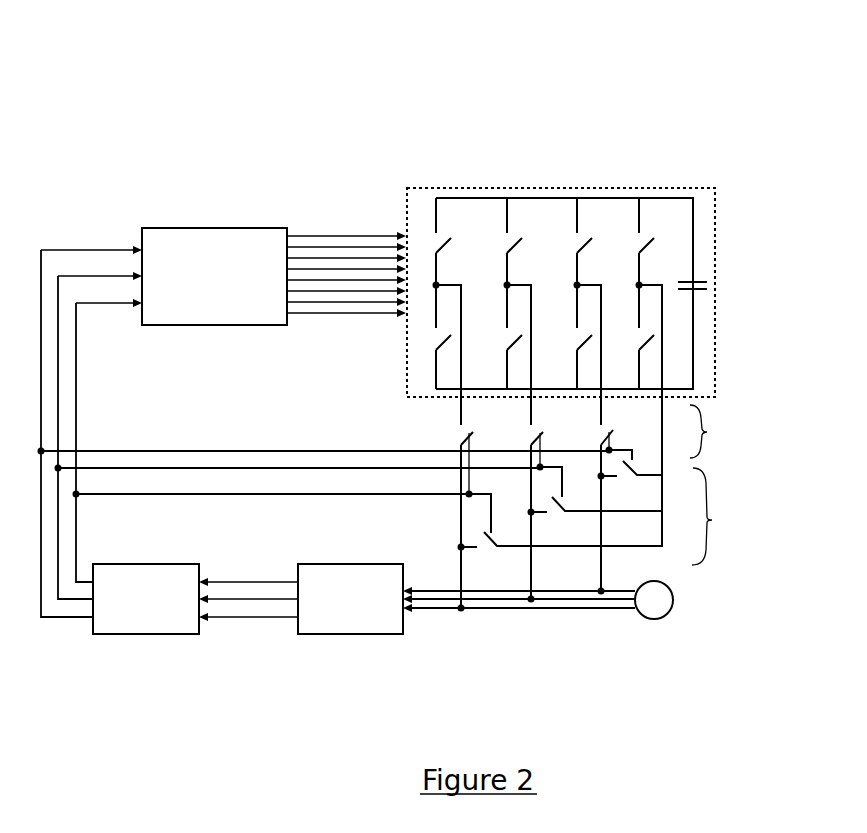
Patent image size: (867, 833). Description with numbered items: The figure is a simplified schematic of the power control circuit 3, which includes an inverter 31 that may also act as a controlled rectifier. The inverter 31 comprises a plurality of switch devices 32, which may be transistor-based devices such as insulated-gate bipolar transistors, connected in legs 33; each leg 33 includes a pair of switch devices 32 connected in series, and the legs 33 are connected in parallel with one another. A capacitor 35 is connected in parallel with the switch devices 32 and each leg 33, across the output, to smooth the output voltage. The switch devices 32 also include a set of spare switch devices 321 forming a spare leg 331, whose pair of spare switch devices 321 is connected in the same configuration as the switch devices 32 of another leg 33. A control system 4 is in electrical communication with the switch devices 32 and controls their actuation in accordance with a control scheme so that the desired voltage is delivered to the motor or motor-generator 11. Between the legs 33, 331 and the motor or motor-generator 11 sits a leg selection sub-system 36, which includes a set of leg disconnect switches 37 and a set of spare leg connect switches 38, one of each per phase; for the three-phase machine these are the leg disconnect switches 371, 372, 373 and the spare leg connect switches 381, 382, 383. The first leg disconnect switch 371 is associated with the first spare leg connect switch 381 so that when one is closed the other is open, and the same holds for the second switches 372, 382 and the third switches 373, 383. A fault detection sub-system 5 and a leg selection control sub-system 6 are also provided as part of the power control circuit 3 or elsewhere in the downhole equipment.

The power control circuit 3 is at (625, 96).
The inverter 31 is at (400, 197).
The switch device 32 is at (508, 317).
The spare switch device 321 is at (642, 376).
The leg 33 is at (578, 182).
The spare leg 331 is at (638, 182).
The capacitor 35 is at (706, 270).
The leg selection sub-system 36 is at (716, 463).
The set of leg disconnect switches 37 is at (707, 432).
The set of spare leg connect switches 38 is at (712, 520).
The first leg disconnect switch 371 is at (480, 506).
The second leg disconnect switch 372 is at (552, 502).
The third leg disconnect switch 373 is at (621, 497).
The first spare leg connect switch 381 is at (560, 535).
The second spare leg connect switch 382 is at (595, 504).
The third spare leg connect switch 383 is at (630, 480).
The control system 4 is at (207, 282).
The fault detection sub-system 5 is at (340, 612).
The leg selection control sub-system 6 is at (134, 612).
The motor or motor-generator 11 is at (645, 609).